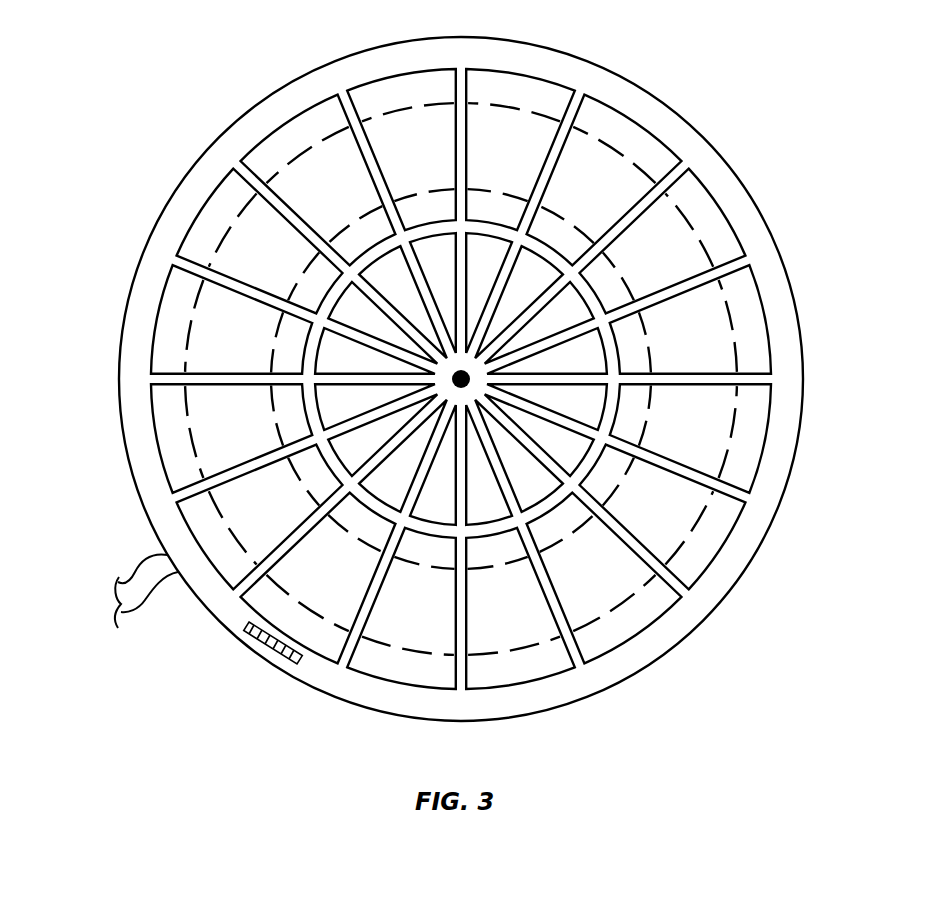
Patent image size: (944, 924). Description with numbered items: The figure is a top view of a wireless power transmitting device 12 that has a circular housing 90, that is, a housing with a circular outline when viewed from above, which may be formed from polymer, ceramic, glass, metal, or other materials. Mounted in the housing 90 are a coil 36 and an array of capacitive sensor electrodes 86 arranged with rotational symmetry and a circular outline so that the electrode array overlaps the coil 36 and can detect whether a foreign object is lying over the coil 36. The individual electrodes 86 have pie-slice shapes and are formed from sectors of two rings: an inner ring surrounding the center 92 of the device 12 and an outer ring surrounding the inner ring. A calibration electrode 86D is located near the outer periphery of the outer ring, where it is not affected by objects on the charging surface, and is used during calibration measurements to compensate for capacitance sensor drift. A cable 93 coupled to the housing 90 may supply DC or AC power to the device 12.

The wireless power transmitting device 12 is at (108, 228).
The coil 36 is at (735, 325).
The electrodes 86 is at (546, 275).
The calibration electrode 86D is at (272, 650).
The housing 90 is at (765, 539).
The center 92 is at (467, 390).
The cable 93 is at (152, 604).